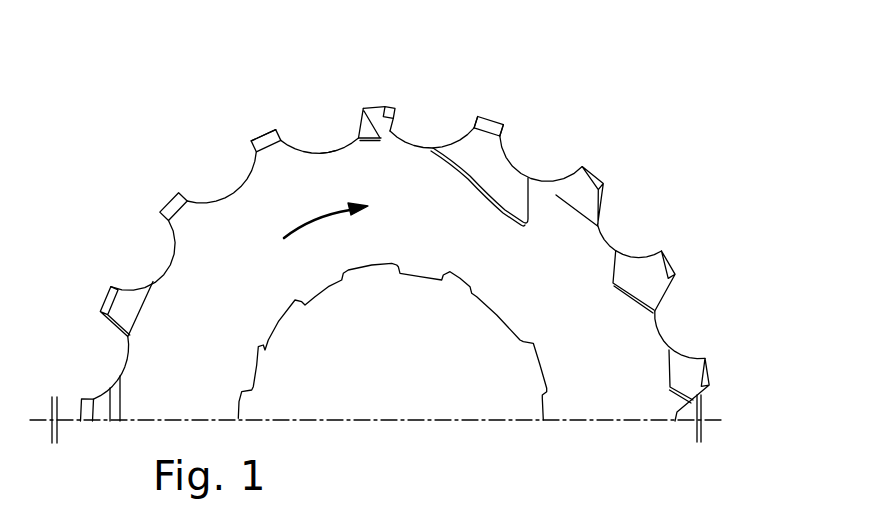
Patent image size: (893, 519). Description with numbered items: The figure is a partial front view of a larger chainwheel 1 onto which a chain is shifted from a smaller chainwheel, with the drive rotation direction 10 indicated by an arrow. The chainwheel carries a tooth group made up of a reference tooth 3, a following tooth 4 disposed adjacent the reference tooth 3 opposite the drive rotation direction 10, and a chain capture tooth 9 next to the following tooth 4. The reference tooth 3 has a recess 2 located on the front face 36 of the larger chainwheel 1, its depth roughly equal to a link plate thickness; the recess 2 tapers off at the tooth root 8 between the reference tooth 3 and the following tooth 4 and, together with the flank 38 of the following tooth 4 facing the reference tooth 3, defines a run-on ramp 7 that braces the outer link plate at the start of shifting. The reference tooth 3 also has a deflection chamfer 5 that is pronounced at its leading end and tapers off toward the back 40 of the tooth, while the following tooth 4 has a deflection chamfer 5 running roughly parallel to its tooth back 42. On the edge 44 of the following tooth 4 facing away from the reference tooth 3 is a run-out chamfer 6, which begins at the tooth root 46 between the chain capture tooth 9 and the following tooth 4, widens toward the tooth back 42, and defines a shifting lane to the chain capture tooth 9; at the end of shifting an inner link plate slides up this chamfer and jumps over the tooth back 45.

The larger chainwheel 1 is at (578, 258).
The recess 2 is at (500, 181).
The reference tooth 3 is at (509, 160).
The following tooth 4 is at (386, 110).
The deflection chamfer 5 is at (386, 107).
The run-out chamfer 6 is at (352, 146).
The run-on ramp 7 is at (480, 180).
The tooth root 8 is at (431, 147).
The chain capture tooth 9 is at (262, 140).
The drive rotation direction 10 is at (293, 231).
The front face 36 is at (603, 353).
The flank 38 is at (398, 134).
The back of the tooth 40 is at (484, 117).
The tooth back 42 is at (387, 113).
The edge 44 is at (364, 125).
The tooth back 45 is at (260, 138).
The tooth root 46 is at (342, 146).